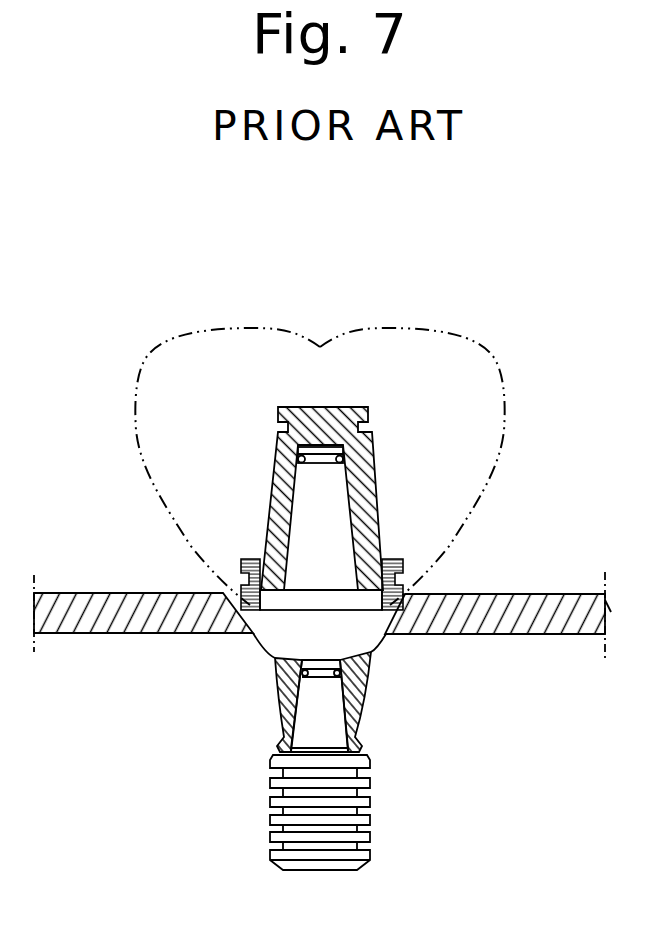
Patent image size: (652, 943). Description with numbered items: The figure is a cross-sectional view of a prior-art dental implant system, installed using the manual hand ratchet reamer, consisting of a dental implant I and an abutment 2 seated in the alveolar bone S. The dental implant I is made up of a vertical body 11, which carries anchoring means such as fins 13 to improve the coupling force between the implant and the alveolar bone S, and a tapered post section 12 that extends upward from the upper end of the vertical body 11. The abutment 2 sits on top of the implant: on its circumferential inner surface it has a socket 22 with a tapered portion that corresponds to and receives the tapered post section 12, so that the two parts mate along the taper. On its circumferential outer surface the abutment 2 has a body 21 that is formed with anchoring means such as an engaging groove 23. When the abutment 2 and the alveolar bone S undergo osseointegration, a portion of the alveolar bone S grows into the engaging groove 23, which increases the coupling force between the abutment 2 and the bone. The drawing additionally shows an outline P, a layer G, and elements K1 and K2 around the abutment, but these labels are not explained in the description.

The prosthesis (crown) P is at (134, 382).
The gingiva G is at (60, 593).
The jig body K1 is at (373, 463).
The fixing nuts K2 is at (242, 557).
The abutment 2 is at (262, 696).
The socket 22 is at (357, 722).
The engaging groove 23 is at (280, 742).
The tapered post section 12 is at (350, 745).
The dental implant I is at (257, 803).
The body 21 is at (350, 820).
The fins 13 is at (360, 837).
The vertical body 11 is at (297, 845).
The alveolar bone S is at (104, 807).